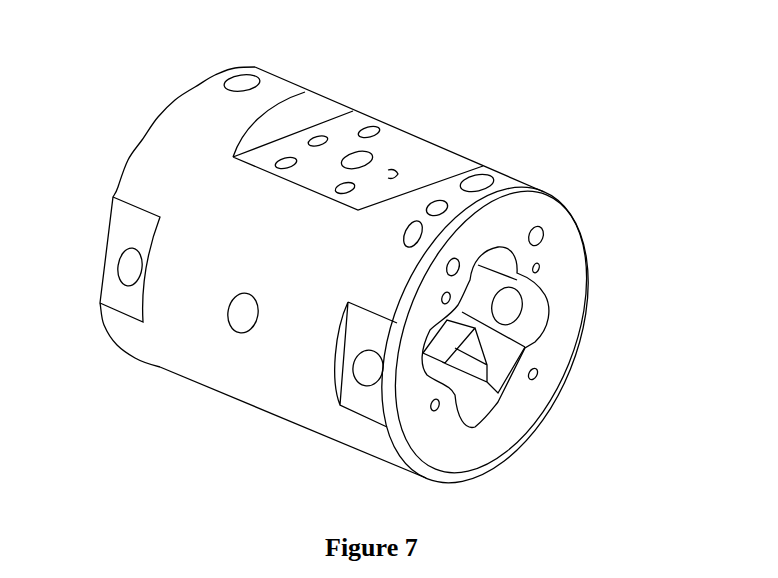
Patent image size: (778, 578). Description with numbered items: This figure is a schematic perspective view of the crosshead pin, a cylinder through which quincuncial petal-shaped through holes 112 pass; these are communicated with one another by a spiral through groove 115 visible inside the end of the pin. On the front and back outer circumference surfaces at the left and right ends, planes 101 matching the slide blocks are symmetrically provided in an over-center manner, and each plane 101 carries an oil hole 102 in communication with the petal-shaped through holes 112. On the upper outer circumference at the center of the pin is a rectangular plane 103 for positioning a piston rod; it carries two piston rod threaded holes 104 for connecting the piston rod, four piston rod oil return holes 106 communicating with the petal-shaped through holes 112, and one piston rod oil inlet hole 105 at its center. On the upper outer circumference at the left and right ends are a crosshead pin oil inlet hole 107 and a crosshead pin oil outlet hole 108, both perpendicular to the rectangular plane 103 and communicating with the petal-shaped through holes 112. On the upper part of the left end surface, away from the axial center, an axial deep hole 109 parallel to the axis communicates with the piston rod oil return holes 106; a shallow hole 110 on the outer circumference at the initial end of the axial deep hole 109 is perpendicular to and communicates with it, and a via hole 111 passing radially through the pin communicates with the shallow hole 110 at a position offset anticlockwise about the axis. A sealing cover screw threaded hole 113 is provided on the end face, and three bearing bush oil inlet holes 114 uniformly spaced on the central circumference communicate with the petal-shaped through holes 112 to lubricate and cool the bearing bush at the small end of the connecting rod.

The plane 101 is at (363, 407).
The oil hole 102 is at (130, 270).
The rectangular plane 103 is at (390, 162).
The piston rod threaded hole 104 is at (320, 137).
The piston rod oil inlet hole 105 is at (363, 158).
The piston rod oil return hole 106 is at (373, 123).
The crosshead pin oil inlet hole 107 is at (233, 77).
The crosshead pin oil outlet hole 108 is at (483, 185).
The axial deep hole 109 is at (543, 242).
The shallow hole 110 is at (447, 208).
The via hole 111 is at (407, 243).
The petal-shaped through hole 112 is at (537, 317).
The sealing cover screw threaded hole 113 is at (537, 377).
The bearing bush oil inlet hole 114 is at (243, 317).
The spiral through groove 115 is at (455, 362).